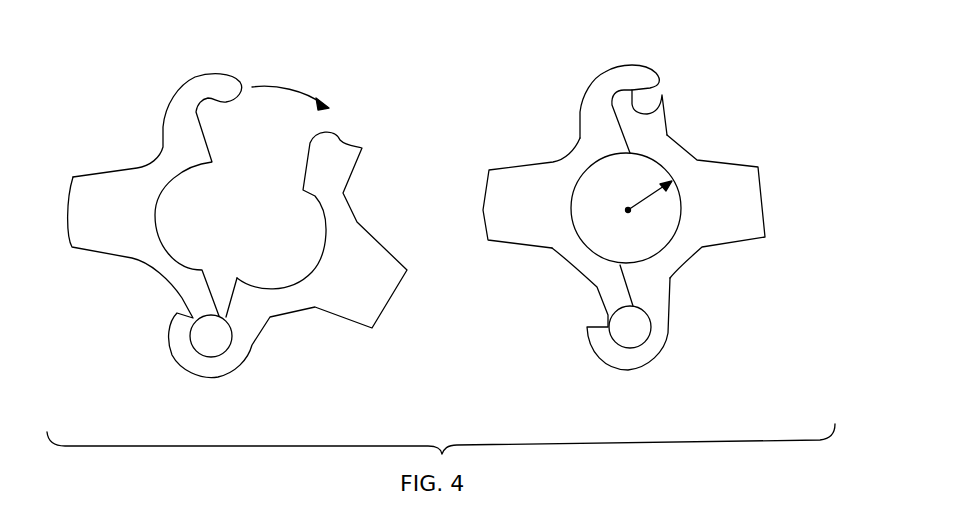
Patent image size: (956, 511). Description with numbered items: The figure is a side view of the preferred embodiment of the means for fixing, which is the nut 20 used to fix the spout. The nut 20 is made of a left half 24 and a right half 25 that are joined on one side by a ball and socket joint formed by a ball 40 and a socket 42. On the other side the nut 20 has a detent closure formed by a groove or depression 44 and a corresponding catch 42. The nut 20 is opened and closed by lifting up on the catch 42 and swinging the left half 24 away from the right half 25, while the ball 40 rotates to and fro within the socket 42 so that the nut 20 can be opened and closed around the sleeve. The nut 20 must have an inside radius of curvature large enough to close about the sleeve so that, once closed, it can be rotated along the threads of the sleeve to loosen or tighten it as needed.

The nut 20 is at (749, 68).
The left half 24 is at (522, 198).
The right half 25 is at (753, 218).
The ball 40 is at (623, 332).
The socket 42 is at (608, 88).
The groove or depression 44 is at (662, 111).